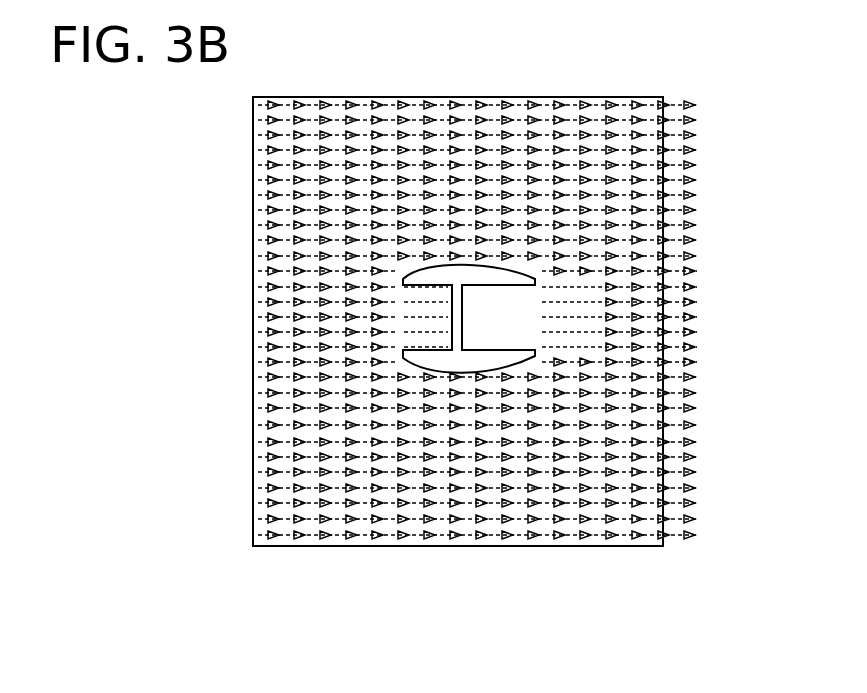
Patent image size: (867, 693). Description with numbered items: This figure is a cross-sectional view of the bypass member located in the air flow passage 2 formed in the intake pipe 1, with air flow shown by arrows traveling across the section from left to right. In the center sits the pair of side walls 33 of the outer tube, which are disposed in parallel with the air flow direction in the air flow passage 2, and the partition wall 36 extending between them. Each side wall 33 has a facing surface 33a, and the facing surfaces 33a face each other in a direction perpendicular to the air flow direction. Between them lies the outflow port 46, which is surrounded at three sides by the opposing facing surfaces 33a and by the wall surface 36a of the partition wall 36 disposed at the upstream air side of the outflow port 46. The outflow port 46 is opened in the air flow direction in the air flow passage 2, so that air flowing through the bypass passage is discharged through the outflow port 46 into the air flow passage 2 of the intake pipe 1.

The intake pipe 1 is at (582, 547).
The air flow passage 2 is at (260, 129).
The side walls 33 is at (465, 273).
The facing surface 33a is at (518, 296).
The partition wall 36 is at (453, 320).
The wall surface 36a is at (462, 332).
The outflow port 46 is at (507, 320).